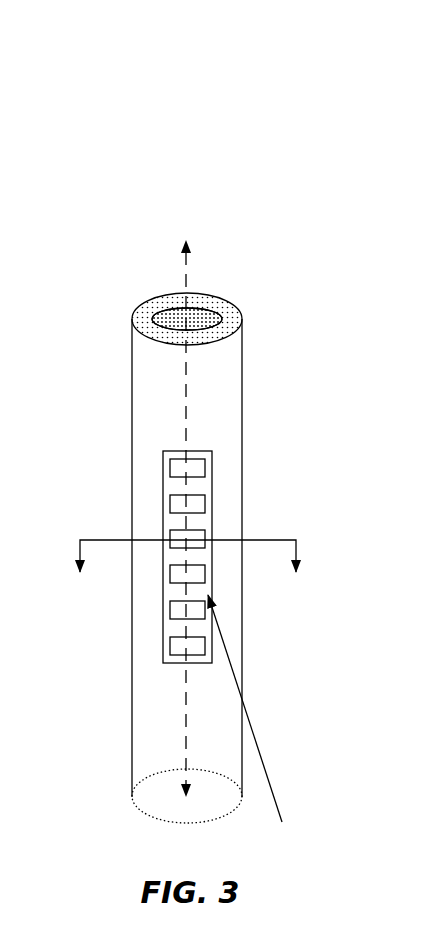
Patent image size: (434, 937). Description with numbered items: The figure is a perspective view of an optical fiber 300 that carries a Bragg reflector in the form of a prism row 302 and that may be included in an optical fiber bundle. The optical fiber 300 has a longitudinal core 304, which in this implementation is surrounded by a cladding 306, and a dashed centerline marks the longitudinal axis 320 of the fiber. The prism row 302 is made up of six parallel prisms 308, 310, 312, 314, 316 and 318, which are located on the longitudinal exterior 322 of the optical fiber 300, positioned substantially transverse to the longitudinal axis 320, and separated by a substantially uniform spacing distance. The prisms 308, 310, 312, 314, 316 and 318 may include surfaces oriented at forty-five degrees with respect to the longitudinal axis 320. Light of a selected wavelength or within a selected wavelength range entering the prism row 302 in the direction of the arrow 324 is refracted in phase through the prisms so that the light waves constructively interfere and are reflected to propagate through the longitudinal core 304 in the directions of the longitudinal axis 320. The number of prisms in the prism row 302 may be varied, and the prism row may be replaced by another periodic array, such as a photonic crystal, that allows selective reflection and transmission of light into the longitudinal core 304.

The optical fiber 300 is at (258, 220).
The prism row 302 is at (212, 460).
The longitudinal core 304 is at (195, 315).
The cladding 306 is at (230, 320).
The prism 308 is at (170, 467).
The prism 310 is at (170, 503).
The prism 312 is at (170, 538).
The prism 314 is at (170, 577).
The prism 316 is at (170, 612).
The prism 318 is at (180, 647).
The longitudinal axis 320 is at (185, 267).
The longitudinal exterior 322 is at (142, 747).
The arrow 324 is at (254, 723).